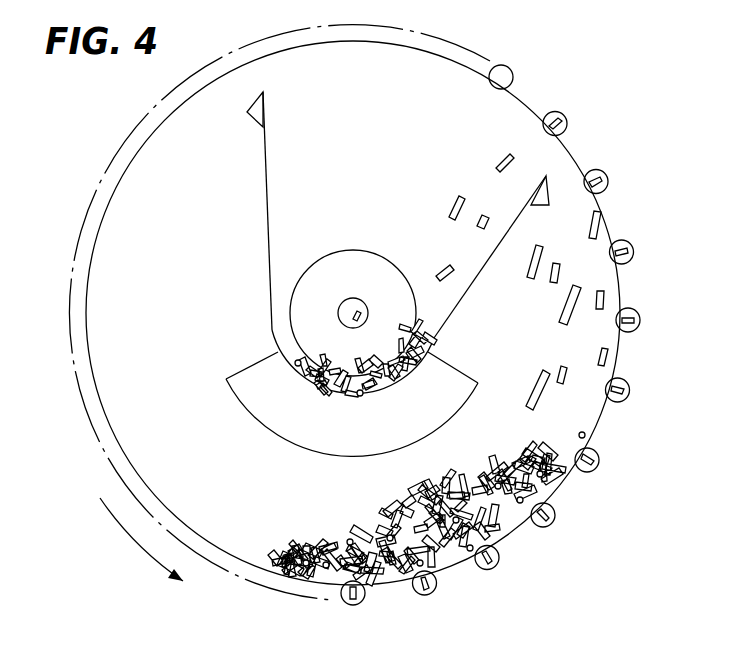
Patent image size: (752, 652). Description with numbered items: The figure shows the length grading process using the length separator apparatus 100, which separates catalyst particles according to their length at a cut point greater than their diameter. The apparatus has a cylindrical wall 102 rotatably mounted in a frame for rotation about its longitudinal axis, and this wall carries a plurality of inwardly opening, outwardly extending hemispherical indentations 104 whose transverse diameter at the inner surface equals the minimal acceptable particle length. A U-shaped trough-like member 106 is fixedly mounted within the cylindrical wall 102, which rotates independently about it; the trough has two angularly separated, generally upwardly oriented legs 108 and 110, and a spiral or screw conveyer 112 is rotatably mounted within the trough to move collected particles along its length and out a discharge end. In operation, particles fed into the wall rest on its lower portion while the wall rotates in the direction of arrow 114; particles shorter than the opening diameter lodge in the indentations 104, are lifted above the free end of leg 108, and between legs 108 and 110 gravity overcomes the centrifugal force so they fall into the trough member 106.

The length separator apparatus 100 is at (543, 97).
The cylindrical wall 102 is at (609, 228).
The indentations 104 is at (615, 248).
The trough-like member 106 is at (268, 262).
The leg 108 is at (462, 307).
The leg 110 is at (267, 211).
The spiral or screw conveyer 112 is at (355, 252).
The arrow 114 is at (137, 549).